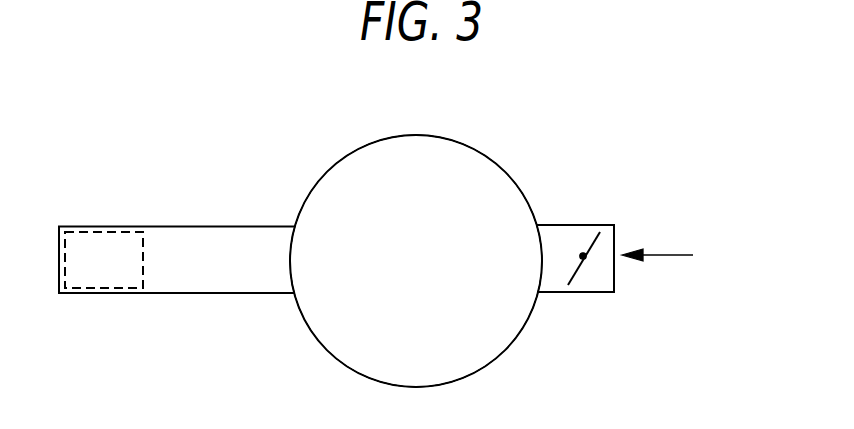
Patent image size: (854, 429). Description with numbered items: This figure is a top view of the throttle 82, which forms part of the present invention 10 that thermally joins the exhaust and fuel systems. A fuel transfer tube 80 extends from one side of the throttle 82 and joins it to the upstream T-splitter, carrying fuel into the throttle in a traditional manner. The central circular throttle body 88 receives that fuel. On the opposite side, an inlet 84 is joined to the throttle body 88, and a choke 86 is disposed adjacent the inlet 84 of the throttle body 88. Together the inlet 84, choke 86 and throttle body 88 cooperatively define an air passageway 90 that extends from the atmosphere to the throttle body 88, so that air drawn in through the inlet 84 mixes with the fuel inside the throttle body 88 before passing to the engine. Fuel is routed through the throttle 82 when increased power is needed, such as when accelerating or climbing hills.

The present invention 10 is at (505, 133).
The fuel transfer tube 80 is at (165, 253).
The throttle 82 is at (453, 133).
The inlet 84 is at (614, 273).
The choke 86 is at (586, 248).
The throttle body 88 is at (435, 260).
The air passageway 90 is at (555, 267).